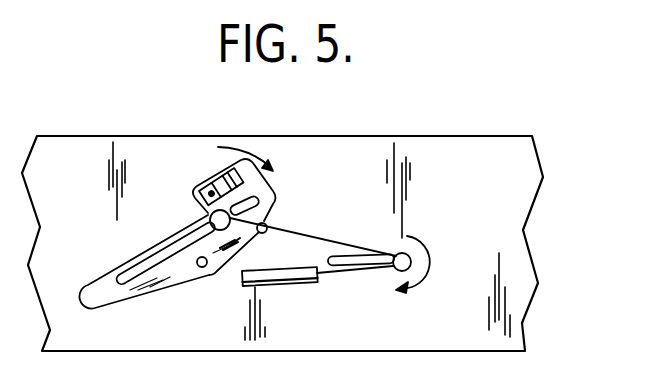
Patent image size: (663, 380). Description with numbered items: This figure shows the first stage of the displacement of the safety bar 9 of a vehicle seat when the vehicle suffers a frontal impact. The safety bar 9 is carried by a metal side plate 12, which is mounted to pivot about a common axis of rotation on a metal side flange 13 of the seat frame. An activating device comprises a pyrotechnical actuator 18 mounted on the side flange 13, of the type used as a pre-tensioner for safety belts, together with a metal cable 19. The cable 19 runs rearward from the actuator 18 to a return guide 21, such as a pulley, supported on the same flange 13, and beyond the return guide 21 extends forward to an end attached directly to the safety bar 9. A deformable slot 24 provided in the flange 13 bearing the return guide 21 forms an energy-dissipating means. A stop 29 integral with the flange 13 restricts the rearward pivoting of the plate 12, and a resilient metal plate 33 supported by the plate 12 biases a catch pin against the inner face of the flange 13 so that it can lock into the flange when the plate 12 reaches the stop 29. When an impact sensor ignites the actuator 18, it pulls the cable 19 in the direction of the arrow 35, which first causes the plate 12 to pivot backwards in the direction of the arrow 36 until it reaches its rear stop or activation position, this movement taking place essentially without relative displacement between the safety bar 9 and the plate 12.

The safety bar 9 is at (210, 219).
The side plate 12 is at (180, 268).
The side flange 13 is at (530, 186).
The pyrotechnical actuator 18 is at (278, 279).
The metal cable 19 is at (345, 238).
The return guide 21 is at (408, 254).
The deformable slot 24 is at (358, 265).
The stop 29 is at (266, 225).
The resilient metal plate 33 is at (228, 185).
The arrow 35 is at (428, 252).
The arrow 36 is at (257, 146).